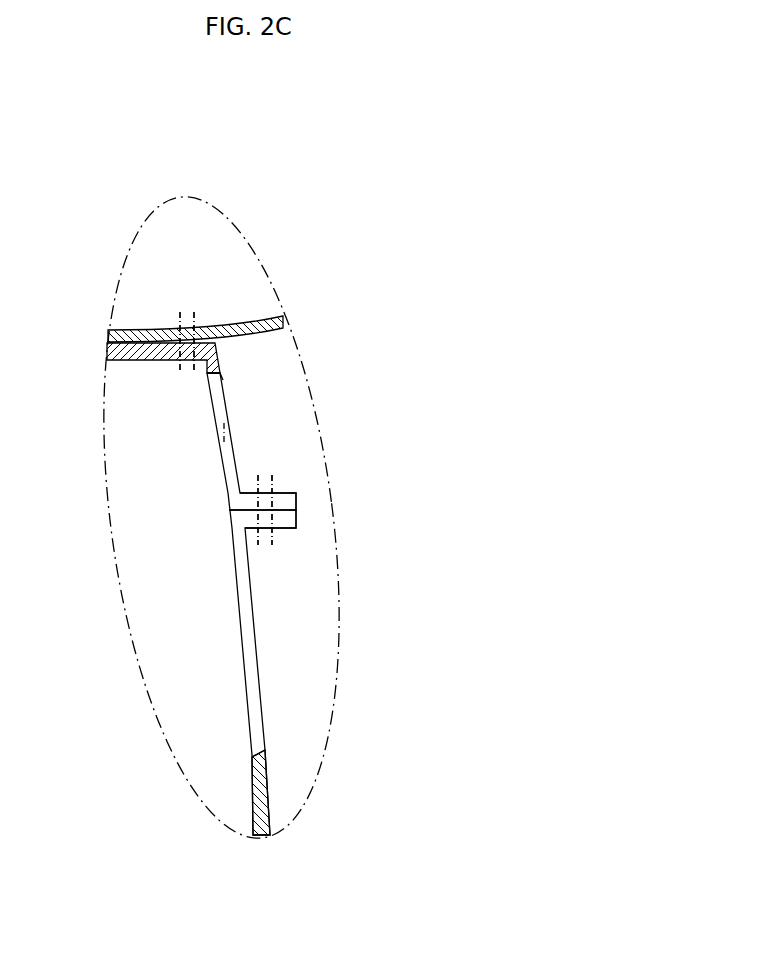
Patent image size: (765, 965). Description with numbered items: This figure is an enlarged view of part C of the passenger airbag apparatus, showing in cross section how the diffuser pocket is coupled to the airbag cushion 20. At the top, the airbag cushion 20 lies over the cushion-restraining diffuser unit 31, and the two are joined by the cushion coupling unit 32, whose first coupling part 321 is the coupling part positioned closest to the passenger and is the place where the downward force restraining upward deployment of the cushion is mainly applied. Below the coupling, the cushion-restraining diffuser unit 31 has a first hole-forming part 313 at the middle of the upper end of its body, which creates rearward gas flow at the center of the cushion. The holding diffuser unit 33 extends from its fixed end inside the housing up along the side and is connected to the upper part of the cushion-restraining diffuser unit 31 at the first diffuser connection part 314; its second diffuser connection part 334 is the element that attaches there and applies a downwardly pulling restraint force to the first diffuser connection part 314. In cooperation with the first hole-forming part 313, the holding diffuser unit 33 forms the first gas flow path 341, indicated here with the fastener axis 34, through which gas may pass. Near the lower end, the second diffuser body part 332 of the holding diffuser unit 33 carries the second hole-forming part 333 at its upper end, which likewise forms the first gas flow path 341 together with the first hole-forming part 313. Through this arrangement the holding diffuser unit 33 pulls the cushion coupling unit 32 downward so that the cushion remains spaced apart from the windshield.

The part C is at (203, 202).
The airbag cushion 20 is at (133, 329).
The cushion-restraining diffuser unit 31 is at (138, 360).
The cushion coupling unit 32 is at (197, 314).
The first coupling part 321 is at (187, 341).
The holding diffuser unit 33 is at (262, 692).
The first hole-forming part 313 is at (223, 380).
The fastener 34 is at (223, 435).
The first gas flow path 341 is at (265, 510).
The first diffuser connection part 314 is at (297, 498).
The second diffuser connection part 334 is at (297, 520).
The second hole-forming part 333 is at (265, 740).
The second diffuser body part 332 is at (265, 786).